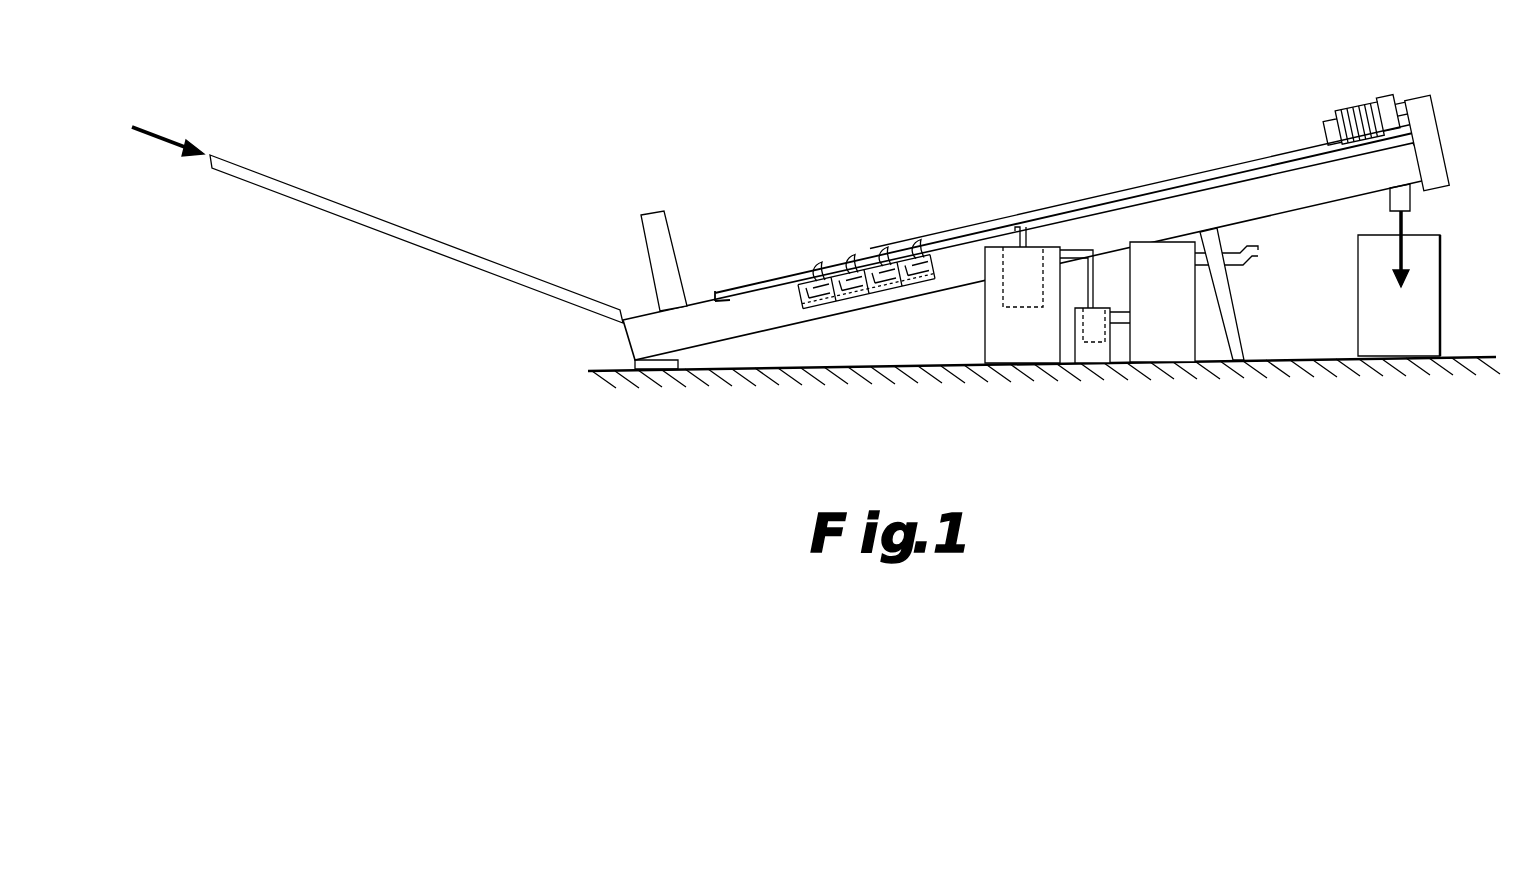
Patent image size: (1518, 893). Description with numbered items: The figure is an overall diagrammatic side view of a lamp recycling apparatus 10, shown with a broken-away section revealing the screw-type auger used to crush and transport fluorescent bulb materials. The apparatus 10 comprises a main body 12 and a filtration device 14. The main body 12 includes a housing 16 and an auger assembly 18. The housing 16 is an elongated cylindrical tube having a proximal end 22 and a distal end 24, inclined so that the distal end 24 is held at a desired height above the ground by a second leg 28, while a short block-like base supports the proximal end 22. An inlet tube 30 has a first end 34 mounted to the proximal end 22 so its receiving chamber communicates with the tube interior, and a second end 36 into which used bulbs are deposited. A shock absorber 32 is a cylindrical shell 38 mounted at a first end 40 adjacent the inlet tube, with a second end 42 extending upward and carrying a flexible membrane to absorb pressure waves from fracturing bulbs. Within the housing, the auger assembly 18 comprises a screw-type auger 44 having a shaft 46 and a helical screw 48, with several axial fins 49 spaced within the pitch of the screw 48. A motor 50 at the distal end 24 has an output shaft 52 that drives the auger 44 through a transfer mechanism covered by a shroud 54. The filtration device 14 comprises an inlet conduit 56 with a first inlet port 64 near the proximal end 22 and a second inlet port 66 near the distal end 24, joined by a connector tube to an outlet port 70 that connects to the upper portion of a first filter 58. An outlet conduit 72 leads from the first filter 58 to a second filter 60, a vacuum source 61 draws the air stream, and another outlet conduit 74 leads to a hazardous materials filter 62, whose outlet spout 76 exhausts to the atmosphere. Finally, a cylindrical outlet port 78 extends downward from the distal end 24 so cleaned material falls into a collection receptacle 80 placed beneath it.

The lamp recycling apparatus 10 is at (1116, 108).
The main body 12 is at (885, 267).
The filtration device 14 is at (1213, 421).
The housing 16 is at (970, 256).
The auger assembly 18 is at (893, 270).
The proximal end 22 is at (625, 340).
The distal end 24 is at (1442, 163).
The second leg 28 is at (1240, 330).
The inlet tube 30 is at (487, 260).
The shock absorber 32 is at (674, 224).
The first end 34 is at (620, 305).
The second end 36 is at (313, 198).
The cylindrical shell 38 is at (690, 248).
The first end 40 is at (686, 286).
The second end 42 is at (650, 212).
The screw-type auger 44 is at (858, 270).
The shaft 46 is at (827, 303).
The helical screw 48 is at (882, 292).
The axial fins 49 is at (816, 280).
The motor 50 is at (1386, 101).
The output shaft 52 is at (1410, 112).
The shroud 54 is at (1430, 126).
The inlet conduit 56 is at (1111, 195).
The first filter 58 is at (1025, 338).
The second filter 60 is at (1098, 352).
The vacuum source 61 is at (1112, 350).
The hazardous materials filter 62 is at (1160, 322).
The first inlet port 64 is at (730, 286).
The second inlet port 66 is at (1387, 141).
The outlet port 70 is at (1010, 226).
The outlet conduit 72 is at (1078, 250).
The outlet conduit 74 is at (1125, 312).
The outlet spout 76 is at (1258, 261).
The cylindrical outlet port 78 is at (1413, 206).
The collection receptacle 80 is at (1444, 305).